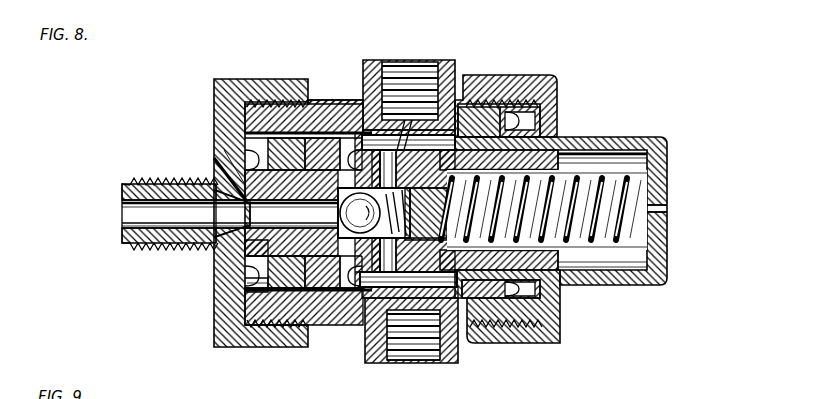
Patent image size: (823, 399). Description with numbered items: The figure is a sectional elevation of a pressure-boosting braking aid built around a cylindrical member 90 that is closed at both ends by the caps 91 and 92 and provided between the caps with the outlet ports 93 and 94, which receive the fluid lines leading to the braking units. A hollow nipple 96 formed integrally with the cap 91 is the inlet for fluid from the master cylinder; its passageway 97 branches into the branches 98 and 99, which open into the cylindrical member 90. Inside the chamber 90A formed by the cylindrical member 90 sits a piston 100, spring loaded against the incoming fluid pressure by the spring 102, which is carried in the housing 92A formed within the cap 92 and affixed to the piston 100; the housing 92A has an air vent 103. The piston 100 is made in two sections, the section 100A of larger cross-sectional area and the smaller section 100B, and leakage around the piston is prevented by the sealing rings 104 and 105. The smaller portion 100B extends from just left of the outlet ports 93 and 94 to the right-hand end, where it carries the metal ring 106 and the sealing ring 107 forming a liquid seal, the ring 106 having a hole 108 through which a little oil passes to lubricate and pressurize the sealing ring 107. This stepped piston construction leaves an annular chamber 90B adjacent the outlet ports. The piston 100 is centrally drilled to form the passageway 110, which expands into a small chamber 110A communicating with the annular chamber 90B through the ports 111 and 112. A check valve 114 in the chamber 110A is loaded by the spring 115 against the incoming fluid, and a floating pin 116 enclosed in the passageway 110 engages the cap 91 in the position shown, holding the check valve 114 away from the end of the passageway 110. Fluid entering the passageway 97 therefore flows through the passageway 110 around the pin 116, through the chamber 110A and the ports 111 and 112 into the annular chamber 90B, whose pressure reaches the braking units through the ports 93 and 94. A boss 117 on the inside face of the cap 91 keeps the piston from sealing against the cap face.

The cylindrical member 90 is at (365, 290).
The chamber 90A is at (255, 288).
The annular chamber 90B is at (465, 345).
The cap 91 is at (270, 125).
The cap 92 is at (540, 74).
The end cap 92A is at (668, 145).
The outlet port 93 is at (412, 365).
The outlet port 94 is at (380, 62).
The hollow nipple 96 is at (153, 255).
The passageway 97 is at (147, 180).
The branch 98 is at (233, 198).
The branch 99 is at (228, 232).
The piston 100 is at (315, 135).
The piston section 100A is at (312, 325).
The piston section 100B is at (562, 284).
The spring 102 is at (607, 173).
The air vent 103 is at (665, 208).
The sealing ring 104 is at (276, 180).
The sealing ring 105 is at (340, 135).
The metal ring 106 is at (470, 112).
The sealing ring 107 is at (532, 130).
The hole 108 is at (495, 105).
The passageway 110 is at (222, 150).
The small chamber 110A is at (330, 300).
The port 111 is at (382, 157).
The port 112 is at (392, 360).
The check valve 114 is at (398, 240).
The spring 115 is at (445, 310).
The floating pin 116 is at (216, 162).
The boss 117 is at (250, 283).